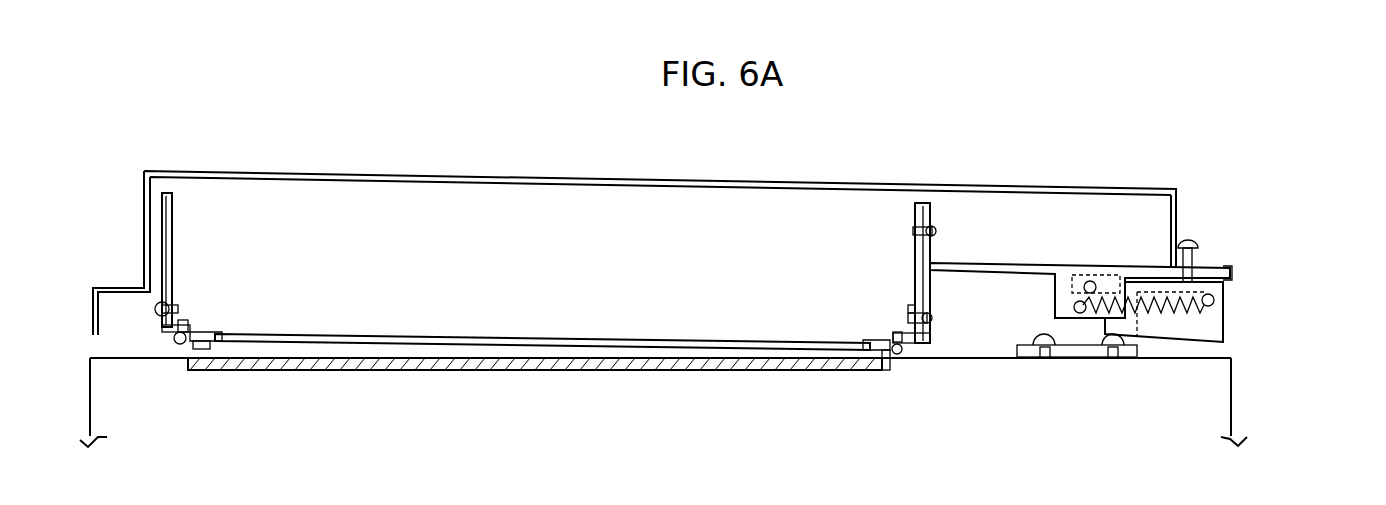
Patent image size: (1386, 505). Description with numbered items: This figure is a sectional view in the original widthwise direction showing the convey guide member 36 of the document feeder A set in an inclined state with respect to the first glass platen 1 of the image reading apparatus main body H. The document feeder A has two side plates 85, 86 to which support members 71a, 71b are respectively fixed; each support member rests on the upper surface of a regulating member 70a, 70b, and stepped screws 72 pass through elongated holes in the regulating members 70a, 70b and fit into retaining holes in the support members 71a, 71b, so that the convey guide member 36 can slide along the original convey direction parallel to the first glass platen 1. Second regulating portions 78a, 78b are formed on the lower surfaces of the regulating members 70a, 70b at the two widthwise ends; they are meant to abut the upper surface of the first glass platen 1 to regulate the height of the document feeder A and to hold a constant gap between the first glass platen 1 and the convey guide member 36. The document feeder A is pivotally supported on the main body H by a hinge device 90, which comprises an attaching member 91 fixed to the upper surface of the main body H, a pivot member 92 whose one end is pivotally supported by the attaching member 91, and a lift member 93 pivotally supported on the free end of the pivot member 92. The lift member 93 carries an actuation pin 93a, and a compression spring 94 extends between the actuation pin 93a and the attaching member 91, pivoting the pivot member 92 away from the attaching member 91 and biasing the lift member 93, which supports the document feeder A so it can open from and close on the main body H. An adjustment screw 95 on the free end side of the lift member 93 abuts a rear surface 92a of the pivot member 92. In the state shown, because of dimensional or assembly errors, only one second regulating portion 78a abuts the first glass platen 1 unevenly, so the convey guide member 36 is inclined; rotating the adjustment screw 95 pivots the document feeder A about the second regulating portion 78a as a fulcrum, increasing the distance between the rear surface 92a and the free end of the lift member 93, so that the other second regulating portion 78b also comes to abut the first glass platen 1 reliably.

The document feeder A is at (1178, 150).
The image reading apparatus main body H is at (1259, 421).
The first glass platen 1 is at (758, 372).
The convey guide member 36 is at (780, 341).
The side plate 86 is at (162, 248).
The support member 71b is at (172, 293).
The regulating member 70b is at (208, 330).
The second regulating portion 78b is at (205, 349).
The stepped screw 72 is at (177, 343).
The side plate 85 is at (915, 207).
The support member 71a is at (912, 306).
The regulating member 70a is at (872, 340).
The second regulating portion 78a is at (886, 371).
The hinge device 90 is at (1263, 352).
The lift member 93 is at (1000, 263).
The actuation pin 93a is at (1078, 313).
The compression spring 94 is at (1170, 304).
The pivot member 92 is at (1215, 318).
The rear surface 92a is at (1225, 270).
The adjustment screw 95 is at (1197, 243).
The attaching member 91 is at (1143, 356).